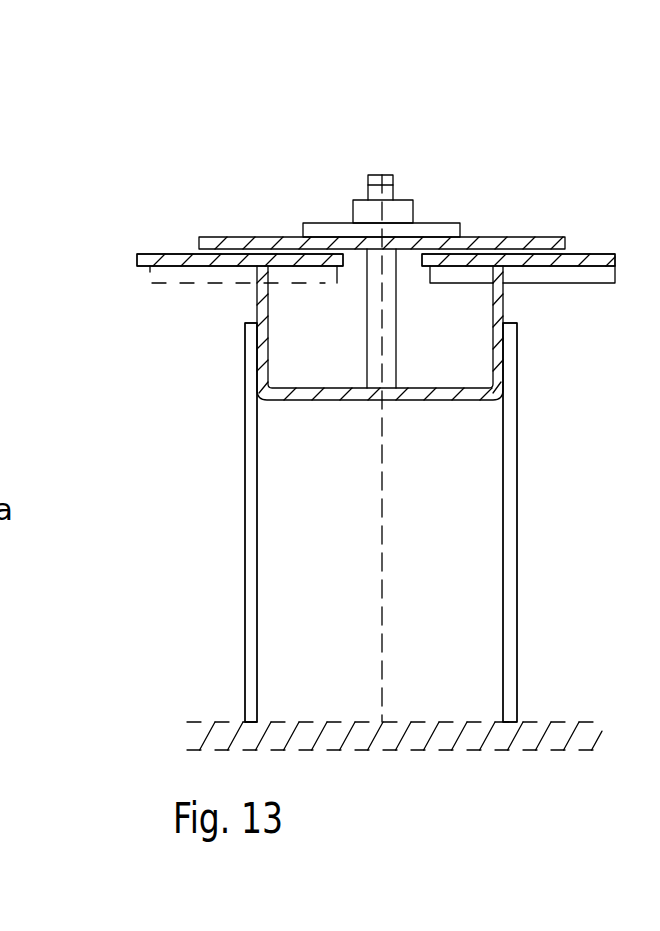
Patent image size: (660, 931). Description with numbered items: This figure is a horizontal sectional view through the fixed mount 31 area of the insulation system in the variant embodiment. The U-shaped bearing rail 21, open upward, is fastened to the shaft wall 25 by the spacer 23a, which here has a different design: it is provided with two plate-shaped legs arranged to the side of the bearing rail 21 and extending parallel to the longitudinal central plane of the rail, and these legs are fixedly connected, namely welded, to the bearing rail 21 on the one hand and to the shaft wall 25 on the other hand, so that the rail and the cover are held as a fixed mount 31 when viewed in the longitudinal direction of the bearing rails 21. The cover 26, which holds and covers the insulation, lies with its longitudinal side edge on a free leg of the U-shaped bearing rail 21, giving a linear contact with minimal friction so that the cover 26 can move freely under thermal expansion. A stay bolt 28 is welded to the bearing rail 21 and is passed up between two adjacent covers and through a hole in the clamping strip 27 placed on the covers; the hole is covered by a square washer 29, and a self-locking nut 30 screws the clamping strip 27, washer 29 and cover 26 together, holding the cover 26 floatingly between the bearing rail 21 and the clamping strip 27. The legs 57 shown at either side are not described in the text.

The bearing rail 21 is at (505, 303).
The spacer 23a is at (232, 552).
The shaft wall 25 is at (165, 250).
The cover 26 is at (592, 258).
The clamping strip 27 is at (510, 245).
The stay bolt 28 is at (388, 193).
The washer 29 is at (435, 232).
The nut 30 is at (356, 216).
The fixed mount 31 is at (152, 378).
The leg 57 is at (250, 630).